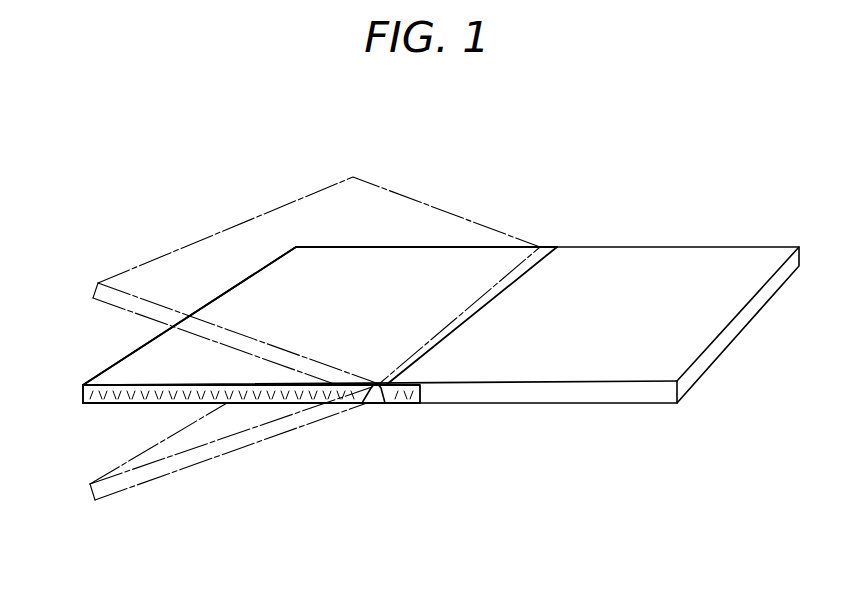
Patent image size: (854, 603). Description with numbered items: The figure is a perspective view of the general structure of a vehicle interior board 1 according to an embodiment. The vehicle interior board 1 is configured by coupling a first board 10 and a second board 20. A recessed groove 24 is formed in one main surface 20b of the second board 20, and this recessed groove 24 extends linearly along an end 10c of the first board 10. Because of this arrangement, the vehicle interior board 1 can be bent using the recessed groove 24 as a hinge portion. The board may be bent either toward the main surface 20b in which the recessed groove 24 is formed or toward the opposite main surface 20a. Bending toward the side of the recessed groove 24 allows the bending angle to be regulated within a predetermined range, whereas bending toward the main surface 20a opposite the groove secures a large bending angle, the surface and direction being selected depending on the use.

The vehicle interior board 1 is at (670, 140).
The first board 10 is at (735, 227).
The end of the first board 10c is at (517, 273).
The second board 20 is at (173, 228).
The main surface opposite to the recessed groove 20a is at (160, 362).
The main surface with the recessed groove 20b is at (155, 405).
The recessed groove 24 is at (385, 394).